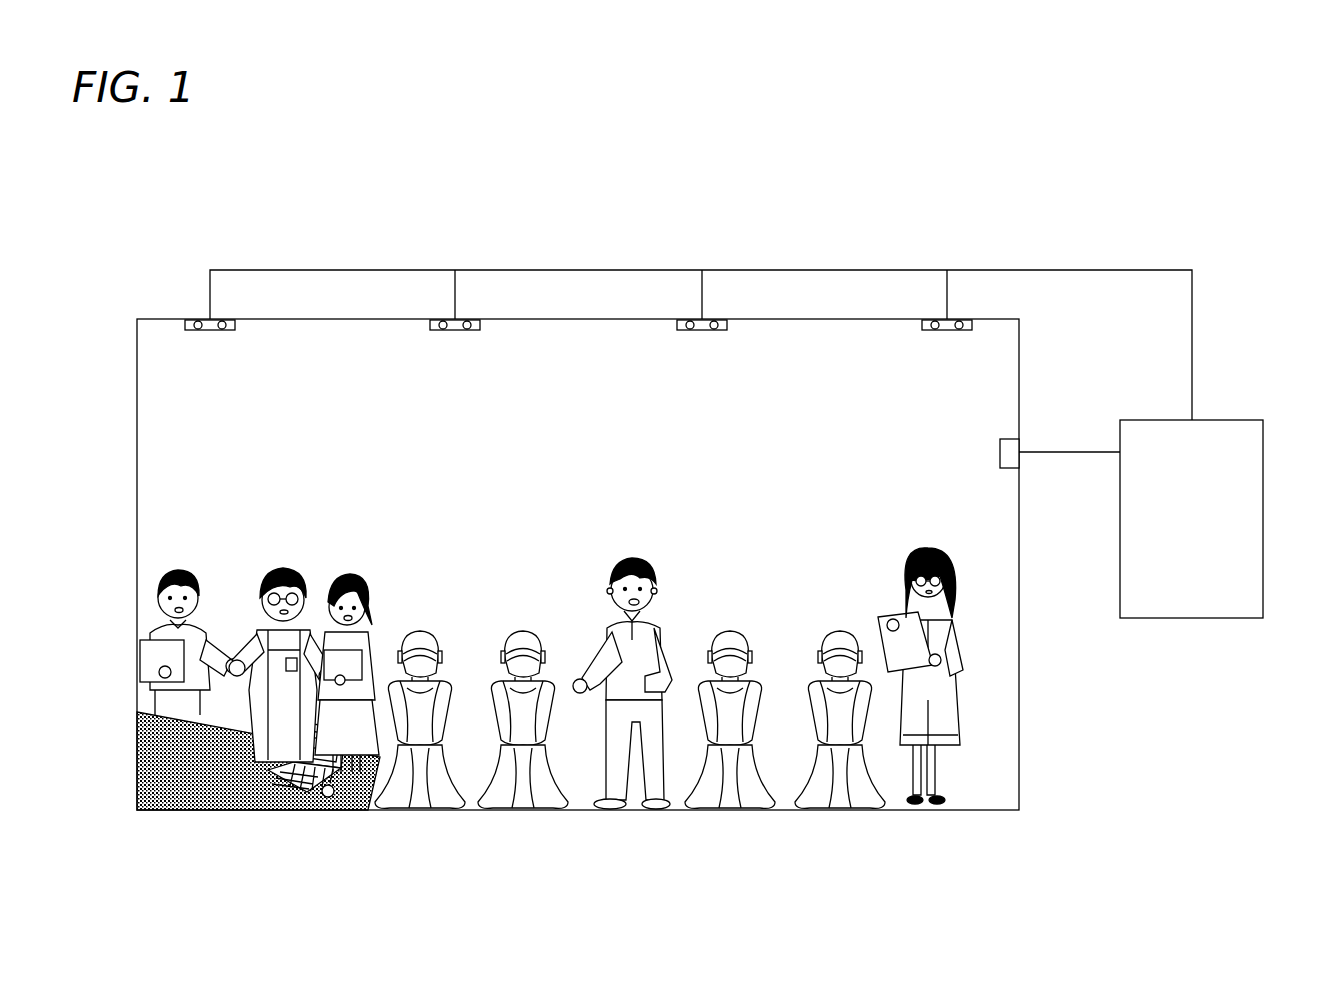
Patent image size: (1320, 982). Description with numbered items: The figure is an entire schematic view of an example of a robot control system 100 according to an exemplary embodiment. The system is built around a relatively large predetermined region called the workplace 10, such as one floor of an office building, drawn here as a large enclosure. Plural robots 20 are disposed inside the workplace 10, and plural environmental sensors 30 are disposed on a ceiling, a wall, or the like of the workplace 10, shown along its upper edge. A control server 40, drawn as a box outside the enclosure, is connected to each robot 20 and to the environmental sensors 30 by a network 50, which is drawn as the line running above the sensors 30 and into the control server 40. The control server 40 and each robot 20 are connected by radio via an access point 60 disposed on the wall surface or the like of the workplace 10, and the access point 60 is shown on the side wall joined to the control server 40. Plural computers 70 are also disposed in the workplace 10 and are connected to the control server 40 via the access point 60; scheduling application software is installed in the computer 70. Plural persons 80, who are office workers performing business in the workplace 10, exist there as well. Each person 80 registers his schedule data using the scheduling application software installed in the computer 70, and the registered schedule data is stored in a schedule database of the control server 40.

The robot control system 100 is at (203, 214).
The workplace 10 is at (137, 462).
The robot 20 is at (520, 632).
The environmental sensor 30 is at (192, 318).
The control server 40 is at (1140, 420).
The network 50 is at (1050, 270).
The access point 60 is at (1012, 468).
The computer 70 is at (262, 797).
The person 80 is at (182, 572).